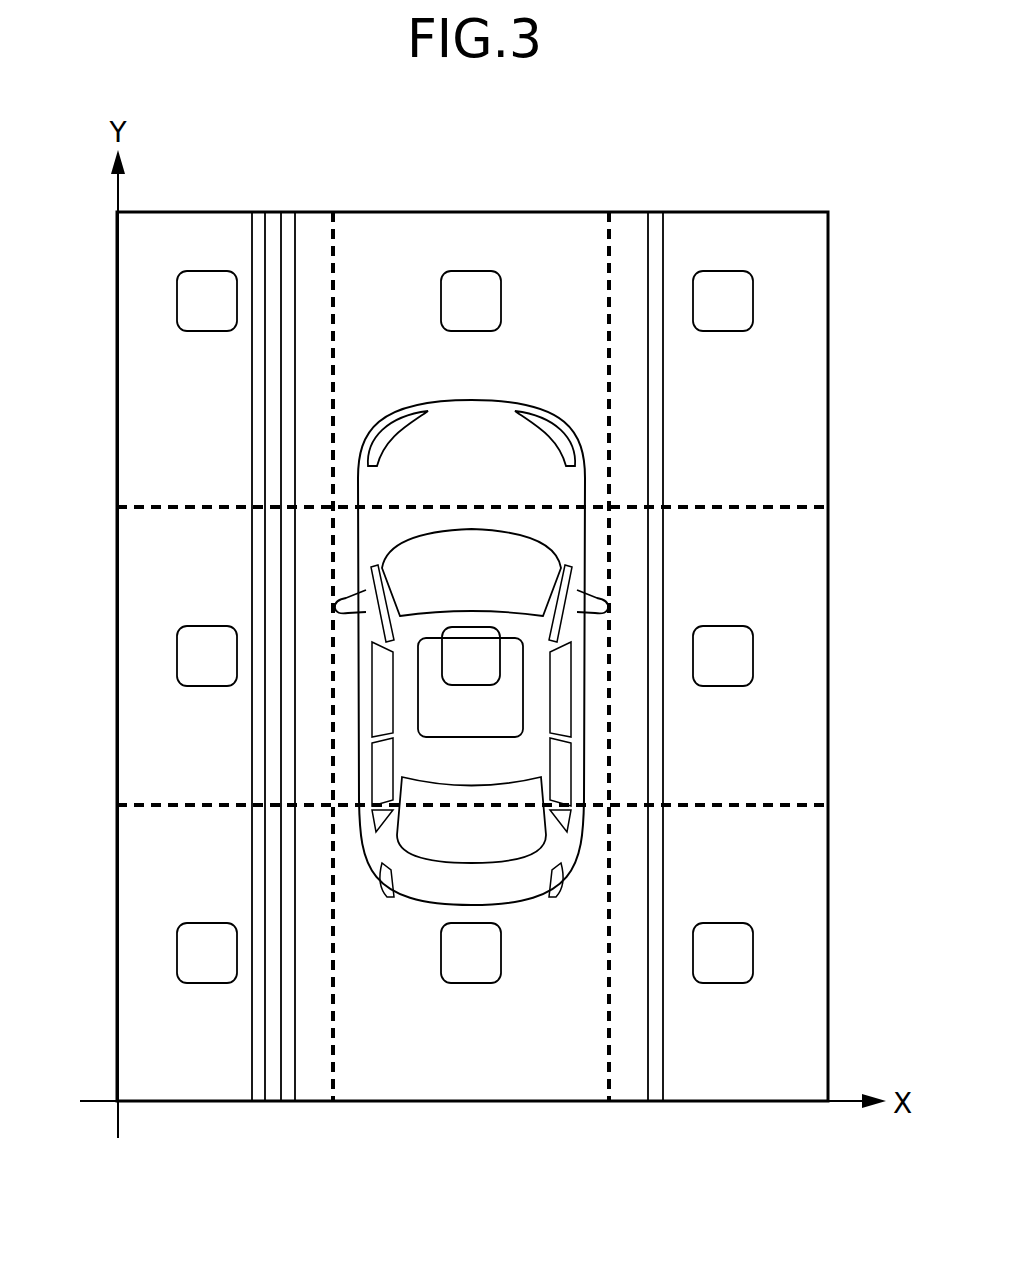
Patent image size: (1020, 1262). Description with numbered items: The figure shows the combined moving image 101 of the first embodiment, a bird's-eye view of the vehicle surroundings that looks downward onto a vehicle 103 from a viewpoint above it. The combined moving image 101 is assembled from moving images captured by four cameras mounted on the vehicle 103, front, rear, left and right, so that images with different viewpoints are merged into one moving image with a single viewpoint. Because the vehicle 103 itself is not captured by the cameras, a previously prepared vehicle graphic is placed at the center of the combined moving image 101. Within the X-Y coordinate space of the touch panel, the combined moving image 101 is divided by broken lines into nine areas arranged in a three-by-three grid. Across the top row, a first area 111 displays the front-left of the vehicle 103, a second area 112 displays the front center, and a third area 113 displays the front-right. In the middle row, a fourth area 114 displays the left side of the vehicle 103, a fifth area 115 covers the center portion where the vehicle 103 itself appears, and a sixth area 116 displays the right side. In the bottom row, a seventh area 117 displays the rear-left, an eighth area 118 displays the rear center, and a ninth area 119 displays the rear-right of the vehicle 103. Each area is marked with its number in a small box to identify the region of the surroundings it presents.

The combined moving image 101 is at (745, 211).
The vehicle 103 is at (493, 422).
The first area 111 is at (137, 362).
The second area 112 is at (442, 238).
The third area 113 is at (808, 362).
The fourth area 114 is at (137, 668).
The fifth area 115 is at (593, 553).
The sixth area 116 is at (810, 668).
The seventh area 117 is at (137, 958).
The eighth area 118 is at (443, 1080).
The ninth area 119 is at (808, 959).